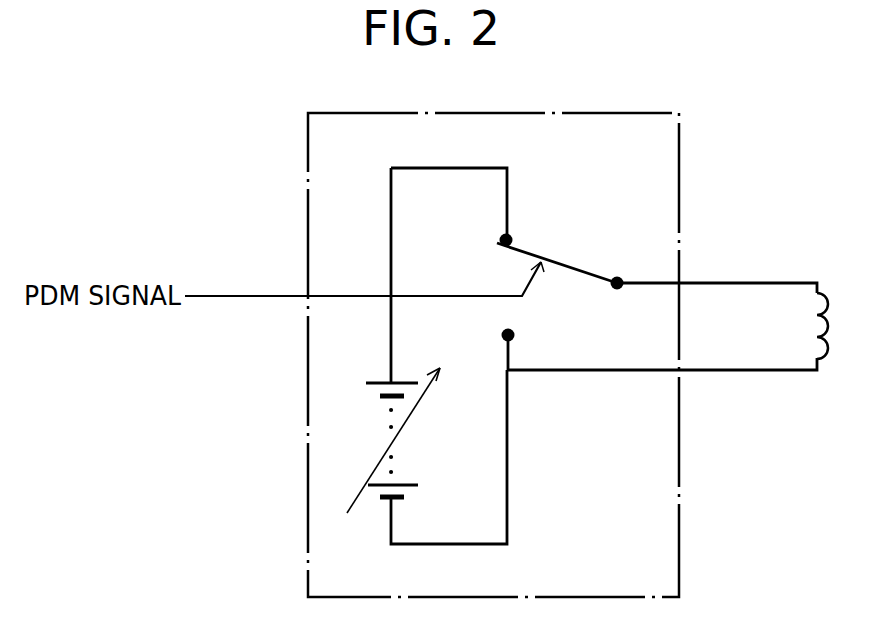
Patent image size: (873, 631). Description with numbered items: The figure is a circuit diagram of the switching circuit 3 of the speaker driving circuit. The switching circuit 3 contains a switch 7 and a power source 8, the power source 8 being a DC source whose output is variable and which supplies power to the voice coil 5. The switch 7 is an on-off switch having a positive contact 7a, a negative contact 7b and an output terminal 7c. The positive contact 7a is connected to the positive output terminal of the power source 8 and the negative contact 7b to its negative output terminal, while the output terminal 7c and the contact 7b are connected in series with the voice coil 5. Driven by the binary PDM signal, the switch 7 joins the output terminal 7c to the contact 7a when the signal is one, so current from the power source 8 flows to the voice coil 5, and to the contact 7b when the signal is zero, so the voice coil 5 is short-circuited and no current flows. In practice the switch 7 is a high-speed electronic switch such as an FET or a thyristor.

The switching circuit 3 is at (679, 157).
The voice coil 5 is at (827, 298).
The switch 7 is at (512, 264).
The positive contact 7a is at (504, 236).
The negative contact 7b is at (504, 335).
The output terminal 7c is at (616, 290).
The power source 8 is at (410, 429).